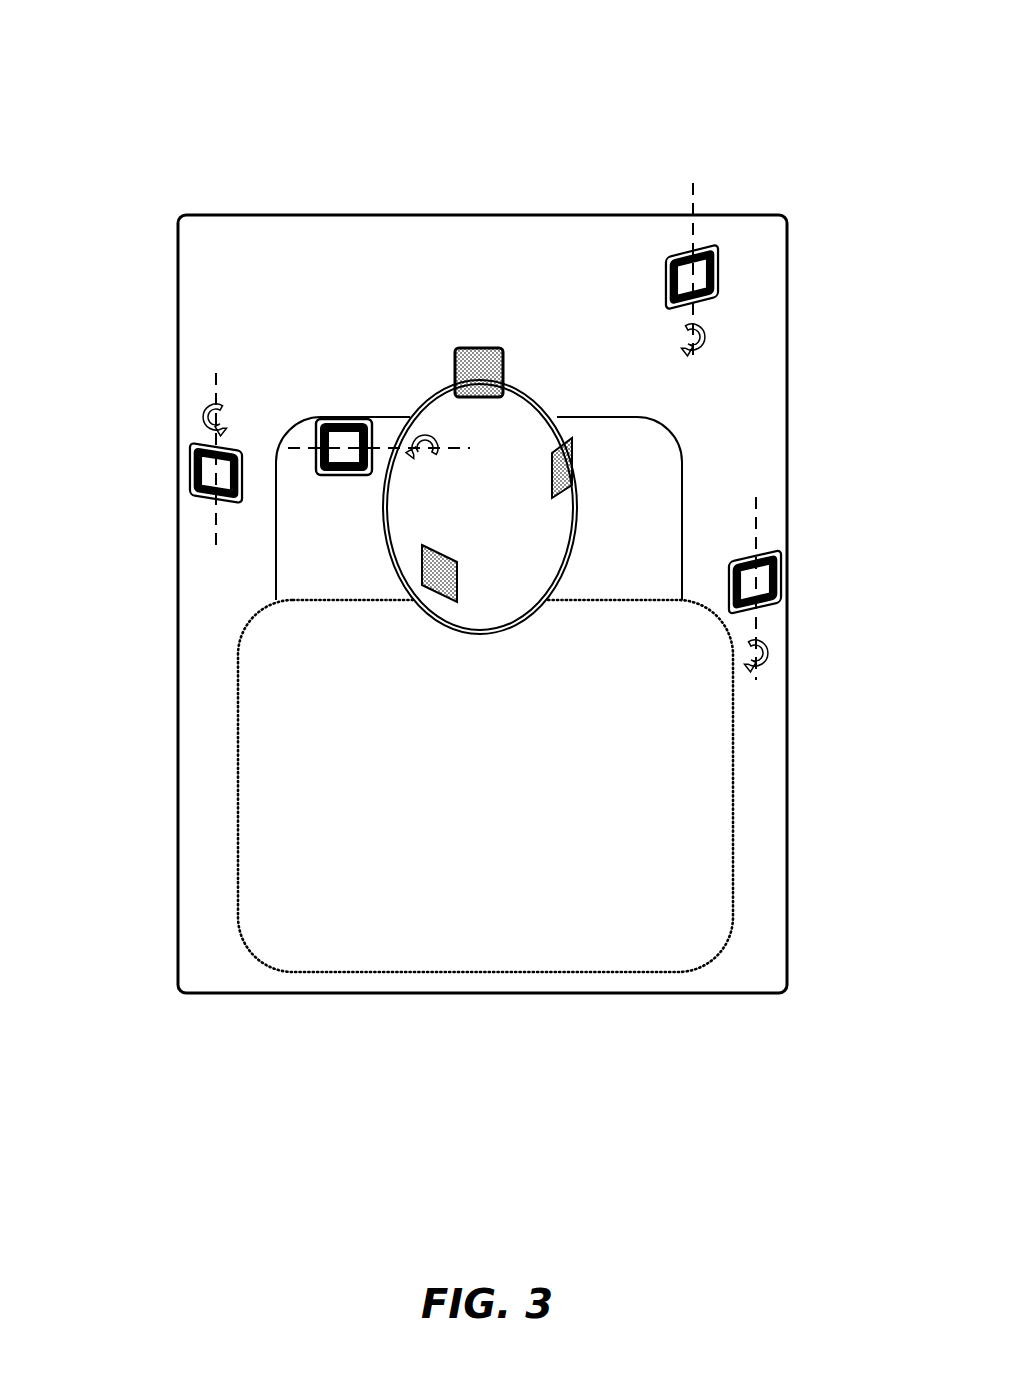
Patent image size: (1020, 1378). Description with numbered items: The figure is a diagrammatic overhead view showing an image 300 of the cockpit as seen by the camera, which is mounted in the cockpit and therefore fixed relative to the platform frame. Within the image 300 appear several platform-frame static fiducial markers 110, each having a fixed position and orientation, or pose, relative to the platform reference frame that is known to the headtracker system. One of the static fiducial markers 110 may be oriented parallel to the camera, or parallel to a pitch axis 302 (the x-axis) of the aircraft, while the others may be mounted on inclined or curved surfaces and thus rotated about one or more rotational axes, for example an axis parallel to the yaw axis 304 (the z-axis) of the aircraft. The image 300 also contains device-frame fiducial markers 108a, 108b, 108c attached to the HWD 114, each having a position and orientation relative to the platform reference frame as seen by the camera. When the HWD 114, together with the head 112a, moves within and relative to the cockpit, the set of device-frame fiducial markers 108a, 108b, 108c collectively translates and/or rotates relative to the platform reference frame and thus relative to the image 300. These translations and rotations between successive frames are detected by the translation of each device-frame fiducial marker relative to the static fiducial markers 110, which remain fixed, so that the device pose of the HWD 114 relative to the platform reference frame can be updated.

The image 300 is at (143, 76).
The pitch axis 302 is at (391, 448).
The yaw axis 304 is at (695, 197).
The platform-frame static fiducial markers 110 is at (340, 418).
The device-frame fiducial marker 108a is at (484, 368).
The device-frame fiducial marker 108b is at (442, 580).
The device-frame fiducial marker 108c is at (565, 480).
The head 112a is at (440, 482).
The HWD 114 is at (477, 563).